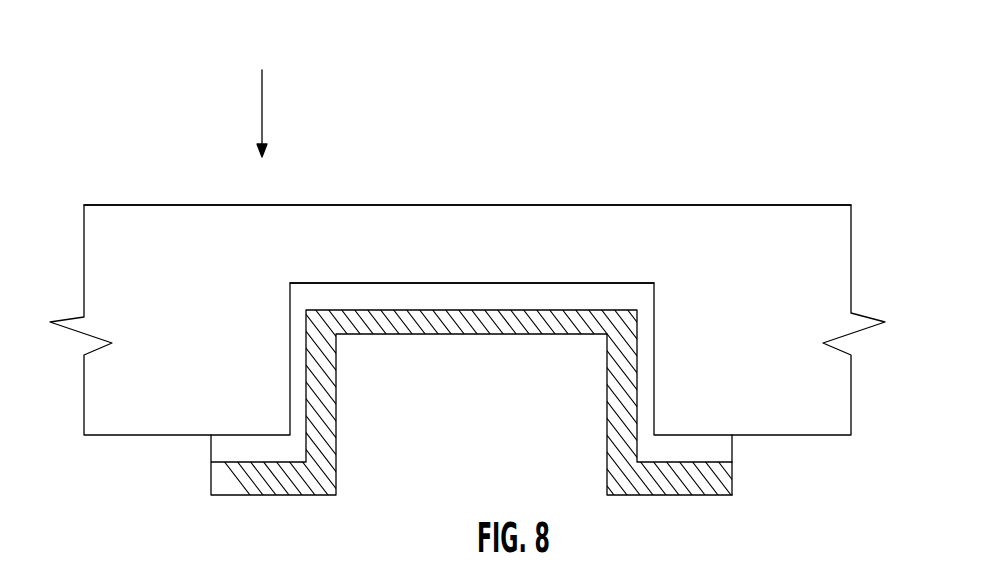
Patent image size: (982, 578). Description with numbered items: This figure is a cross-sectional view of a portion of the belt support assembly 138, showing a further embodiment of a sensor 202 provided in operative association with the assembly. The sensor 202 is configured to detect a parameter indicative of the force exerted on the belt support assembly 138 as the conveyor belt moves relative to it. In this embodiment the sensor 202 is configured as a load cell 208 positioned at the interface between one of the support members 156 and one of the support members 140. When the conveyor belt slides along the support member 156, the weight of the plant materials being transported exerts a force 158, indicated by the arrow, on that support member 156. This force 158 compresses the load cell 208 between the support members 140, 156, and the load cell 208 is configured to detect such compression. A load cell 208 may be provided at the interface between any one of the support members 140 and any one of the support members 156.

The belt support assembly 138 is at (127, 83).
The support member 156 is at (733, 205).
The sensor 202 is at (569, 289).
The load cell 208 is at (430, 293).
The support member 140 is at (271, 497).
The force 158 is at (262, 115).